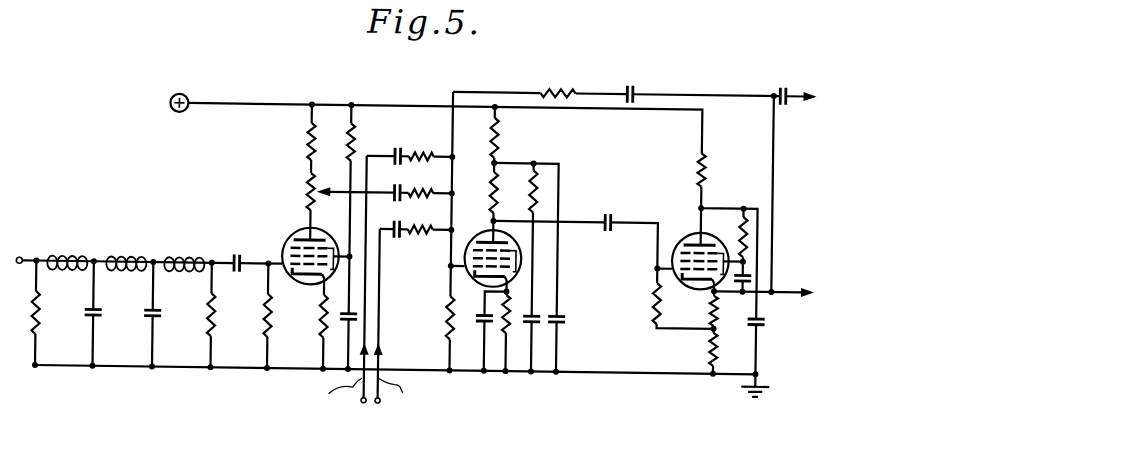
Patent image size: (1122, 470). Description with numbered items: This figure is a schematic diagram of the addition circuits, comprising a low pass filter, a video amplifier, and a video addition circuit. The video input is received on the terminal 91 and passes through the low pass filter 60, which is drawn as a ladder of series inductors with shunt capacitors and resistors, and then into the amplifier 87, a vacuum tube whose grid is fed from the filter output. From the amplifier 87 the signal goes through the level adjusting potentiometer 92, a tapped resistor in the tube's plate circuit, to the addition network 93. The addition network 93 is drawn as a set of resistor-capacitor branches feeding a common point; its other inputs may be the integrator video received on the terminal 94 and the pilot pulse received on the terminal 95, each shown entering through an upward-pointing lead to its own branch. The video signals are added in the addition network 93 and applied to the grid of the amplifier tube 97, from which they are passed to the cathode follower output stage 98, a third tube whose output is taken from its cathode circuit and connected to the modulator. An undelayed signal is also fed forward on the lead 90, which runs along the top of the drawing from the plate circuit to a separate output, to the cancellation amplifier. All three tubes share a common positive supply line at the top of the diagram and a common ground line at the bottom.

The filter 60 is at (194, 240).
The amplifier 87 is at (289, 233).
The lead 90 is at (795, 79).
The terminal 91 is at (21, 260).
The level adjusting potentiometer 92 is at (306, 184).
The addition network 93 is at (415, 88).
The terminal 94 is at (362, 400).
The terminal 95 is at (378, 401).
The amplifier tube 97 is at (472, 227).
The cathode follower output stage 98 is at (678, 220).